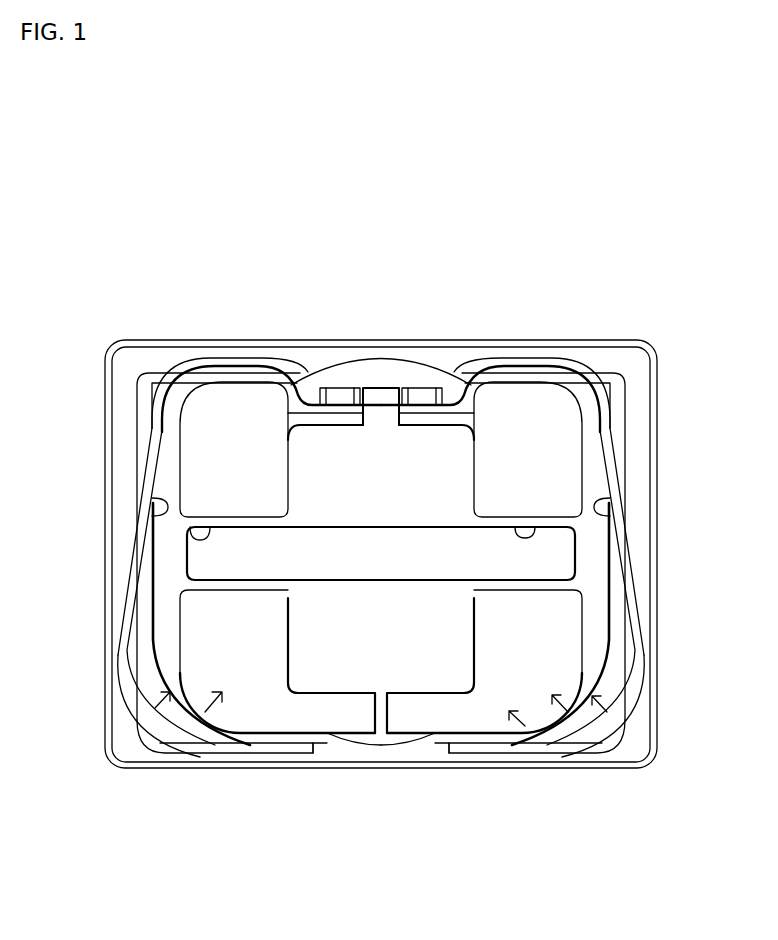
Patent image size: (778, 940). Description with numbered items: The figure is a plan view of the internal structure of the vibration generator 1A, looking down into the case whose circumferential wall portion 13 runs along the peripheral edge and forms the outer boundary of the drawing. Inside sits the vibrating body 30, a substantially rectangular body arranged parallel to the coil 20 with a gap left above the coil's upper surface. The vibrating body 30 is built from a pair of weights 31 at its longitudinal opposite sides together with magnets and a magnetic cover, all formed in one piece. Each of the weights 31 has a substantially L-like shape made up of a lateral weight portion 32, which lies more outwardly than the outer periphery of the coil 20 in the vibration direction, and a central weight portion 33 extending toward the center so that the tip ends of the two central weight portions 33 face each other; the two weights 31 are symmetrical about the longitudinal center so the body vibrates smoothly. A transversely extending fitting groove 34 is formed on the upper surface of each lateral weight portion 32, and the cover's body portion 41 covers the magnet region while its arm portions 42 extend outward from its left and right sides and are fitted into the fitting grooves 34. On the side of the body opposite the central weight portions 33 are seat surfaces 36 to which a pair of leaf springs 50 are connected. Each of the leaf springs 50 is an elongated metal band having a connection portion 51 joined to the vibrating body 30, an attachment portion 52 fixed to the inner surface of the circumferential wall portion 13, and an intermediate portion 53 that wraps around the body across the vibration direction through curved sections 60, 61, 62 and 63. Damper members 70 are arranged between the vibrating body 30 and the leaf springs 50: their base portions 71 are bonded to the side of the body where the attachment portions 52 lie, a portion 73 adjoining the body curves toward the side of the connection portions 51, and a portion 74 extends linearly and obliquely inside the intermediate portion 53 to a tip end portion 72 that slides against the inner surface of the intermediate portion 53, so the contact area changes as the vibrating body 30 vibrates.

The vibration generator 1A is at (338, 255).
The circumferential wall portion 13 is at (150, 344).
The coil 20 is at (390, 368).
The vibrating body 30 is at (520, 745).
The weights 31 is at (195, 752).
The lateral weight portion 32 is at (197, 455).
The central weight portion 33 is at (357, 715).
The fitting groove 34 is at (203, 538).
The seat surfaces 36 is at (332, 393).
The body portion 41 is at (323, 675).
The arm portions 42 is at (192, 565).
The leaf springs 50 is at (109, 638).
The connection portion 51 is at (343, 390).
The attachment portion 52 is at (233, 762).
The intermediate portion 53 is at (160, 490).
The curved section 60 is at (300, 378).
The curved section 61 is at (262, 359).
The curved section 62 is at (178, 364).
The curved section 63 is at (135, 700).
The damper members 70 is at (155, 708).
The base portions 71 is at (345, 745).
The tip end portion 72 is at (158, 505).
The portion adjoining the vibrating body 73 is at (205, 712).
The linearly extending portion 74 is at (155, 650).